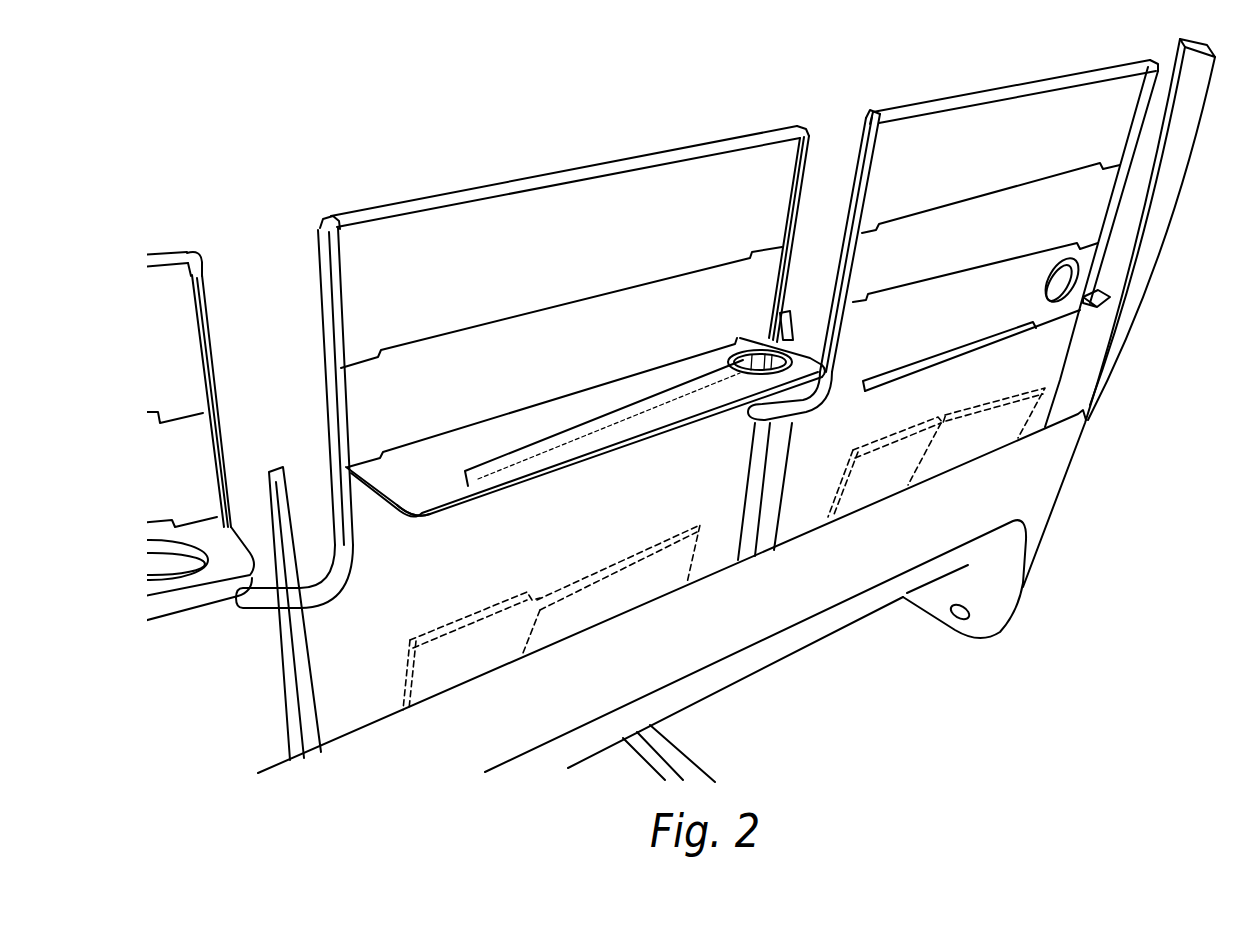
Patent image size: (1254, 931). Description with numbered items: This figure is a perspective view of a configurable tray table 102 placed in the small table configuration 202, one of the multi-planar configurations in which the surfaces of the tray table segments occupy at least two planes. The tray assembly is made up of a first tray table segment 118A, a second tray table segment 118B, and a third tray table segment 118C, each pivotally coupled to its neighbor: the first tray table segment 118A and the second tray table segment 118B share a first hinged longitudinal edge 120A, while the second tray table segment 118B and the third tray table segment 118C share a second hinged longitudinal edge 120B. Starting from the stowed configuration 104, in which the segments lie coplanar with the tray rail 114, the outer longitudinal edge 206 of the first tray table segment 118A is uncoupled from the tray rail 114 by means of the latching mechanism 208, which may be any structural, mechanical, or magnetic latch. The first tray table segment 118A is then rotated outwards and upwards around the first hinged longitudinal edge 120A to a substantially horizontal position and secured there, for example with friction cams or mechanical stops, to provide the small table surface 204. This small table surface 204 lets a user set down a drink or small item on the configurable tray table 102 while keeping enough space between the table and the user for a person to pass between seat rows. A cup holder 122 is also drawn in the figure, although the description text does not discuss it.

The configurable tray table 102 is at (508, 131).
The stowed configuration 104 is at (1058, 334).
The tray rail 114 is at (336, 475).
The first tray table segment 118A is at (658, 403).
The second tray table segment 118B is at (653, 344).
The third tray table segment 118C is at (649, 245).
The first hinged longitudinal edge 120A is at (560, 394).
The second hinged longitudinal edge 120B is at (560, 302).
The cup holder 122 is at (740, 370).
The small table configuration 202 is at (622, 457).
The small table surface 204 is at (414, 500).
The outer longitudinal edge 206 is at (543, 477).
The latching mechanism 208 is at (393, 506).